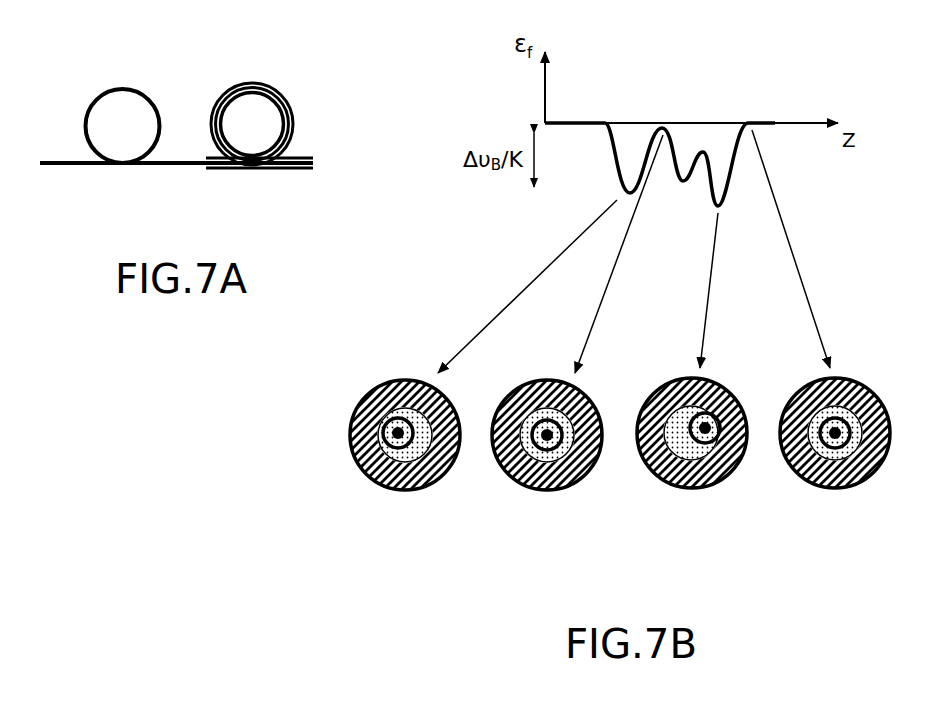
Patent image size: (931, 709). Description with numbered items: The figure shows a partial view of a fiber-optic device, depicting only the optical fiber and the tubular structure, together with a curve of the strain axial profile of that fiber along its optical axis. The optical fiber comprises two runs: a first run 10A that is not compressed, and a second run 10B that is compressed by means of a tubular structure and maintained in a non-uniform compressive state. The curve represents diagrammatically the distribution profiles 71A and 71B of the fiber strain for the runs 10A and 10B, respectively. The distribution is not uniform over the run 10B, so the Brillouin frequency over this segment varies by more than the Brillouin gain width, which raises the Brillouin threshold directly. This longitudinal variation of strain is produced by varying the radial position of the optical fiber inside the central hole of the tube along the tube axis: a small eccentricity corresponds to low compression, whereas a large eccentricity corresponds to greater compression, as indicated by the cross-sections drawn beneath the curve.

In FIG. 7A, the first run 10A is at (107, 85).
In FIG. 7A, the second run 10B is at (233, 78).
In FIG. 7B, the distribution profile 71A is at (578, 127).
In FIG. 7B, the distribution profile 71B is at (683, 133).